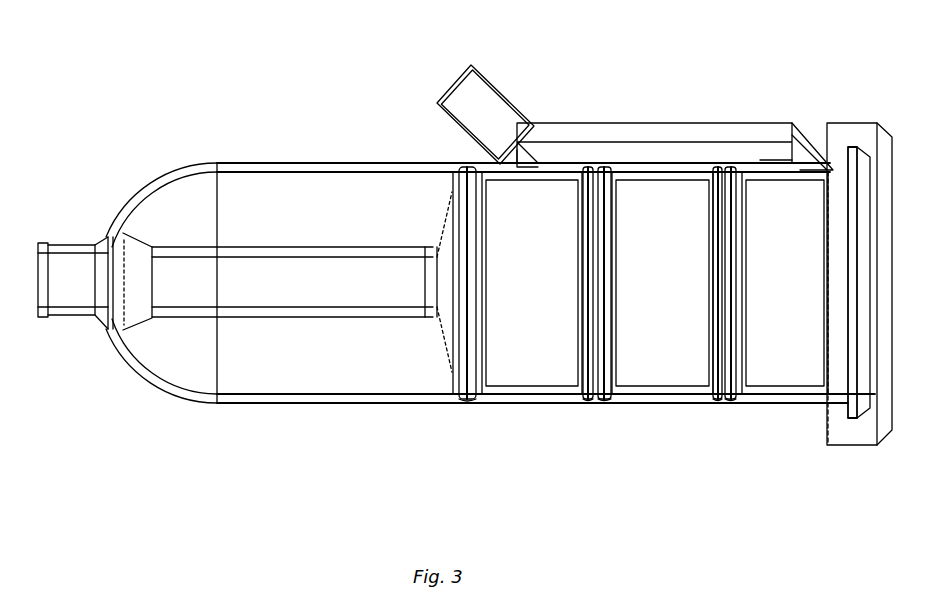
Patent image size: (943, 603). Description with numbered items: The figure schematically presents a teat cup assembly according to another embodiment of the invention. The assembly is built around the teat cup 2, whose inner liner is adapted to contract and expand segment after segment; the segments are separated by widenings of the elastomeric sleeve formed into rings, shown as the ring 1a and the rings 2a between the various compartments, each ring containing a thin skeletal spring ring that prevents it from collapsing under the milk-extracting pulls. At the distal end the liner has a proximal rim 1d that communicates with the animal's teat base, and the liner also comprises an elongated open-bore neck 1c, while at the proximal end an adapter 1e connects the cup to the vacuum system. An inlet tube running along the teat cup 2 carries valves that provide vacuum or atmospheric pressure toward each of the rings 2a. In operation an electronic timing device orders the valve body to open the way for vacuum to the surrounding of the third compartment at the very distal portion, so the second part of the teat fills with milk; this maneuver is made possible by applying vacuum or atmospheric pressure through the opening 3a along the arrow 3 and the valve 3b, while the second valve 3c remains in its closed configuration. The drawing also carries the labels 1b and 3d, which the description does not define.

The ring 1a is at (722, 340).
The end support plate 1b is at (843, 430).
The elongated open-bore neck 1c is at (345, 312).
The proximal rim 1d is at (142, 288).
The adapter 1e is at (70, 273).
The teat cup 2 is at (380, 163).
The rings 2a is at (718, 397).
The arrow 3 is at (500, 92).
The opening 3a is at (477, 100).
The valve 3b is at (800, 177).
The second valve 3c is at (678, 170).
The connecting portion 3d is at (557, 167).